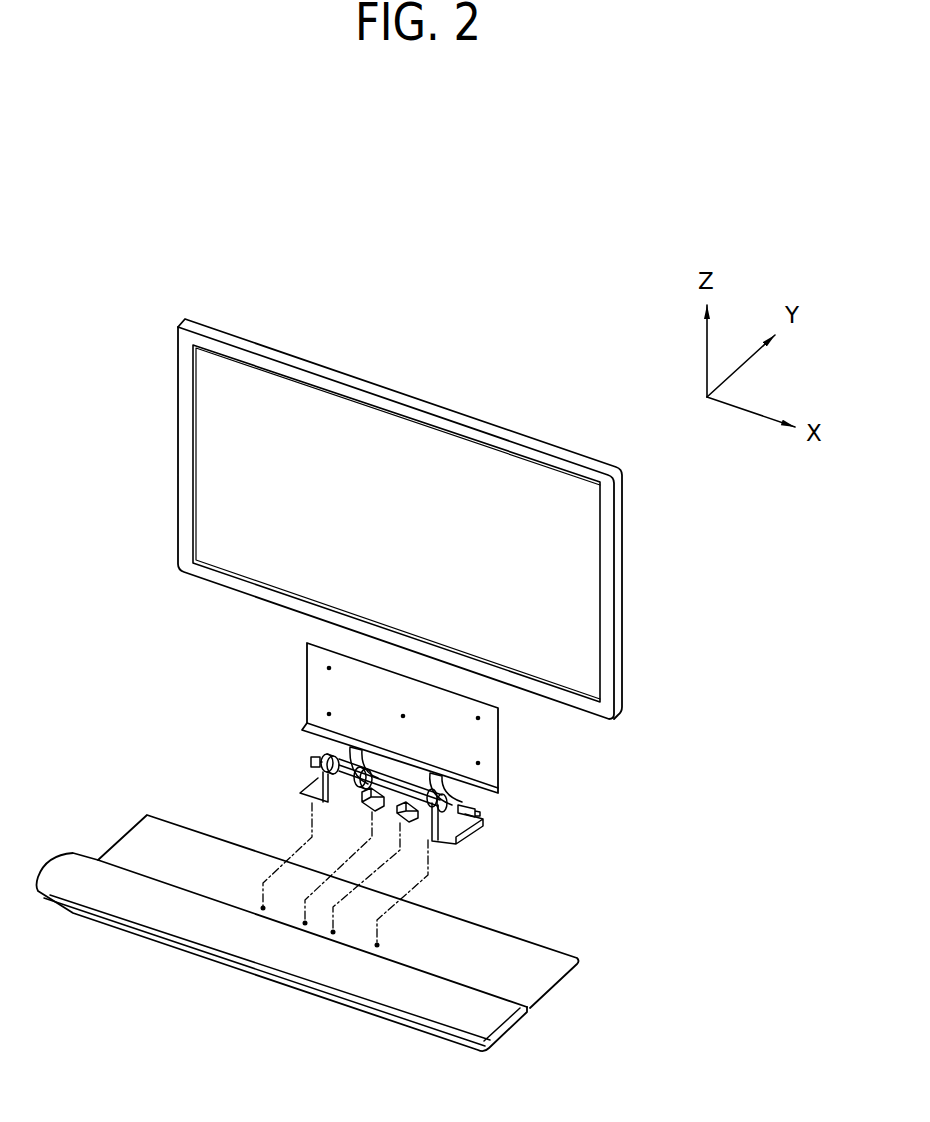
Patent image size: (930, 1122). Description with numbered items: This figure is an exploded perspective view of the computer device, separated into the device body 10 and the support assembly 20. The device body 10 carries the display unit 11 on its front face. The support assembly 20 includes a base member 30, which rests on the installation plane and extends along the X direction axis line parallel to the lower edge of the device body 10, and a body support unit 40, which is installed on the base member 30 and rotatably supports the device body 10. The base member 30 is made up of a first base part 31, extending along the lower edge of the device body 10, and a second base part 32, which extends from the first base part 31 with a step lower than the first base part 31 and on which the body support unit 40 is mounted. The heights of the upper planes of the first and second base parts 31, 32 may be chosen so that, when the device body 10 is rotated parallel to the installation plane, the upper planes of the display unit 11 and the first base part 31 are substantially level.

The device body 10 is at (153, 445).
The display unit 11 is at (293, 428).
The support assembly 20 is at (598, 810).
The base member 30 is at (308, 935).
The first base part 31 is at (230, 937).
The second base part 32 is at (178, 868).
The body support unit 40 is at (283, 670).